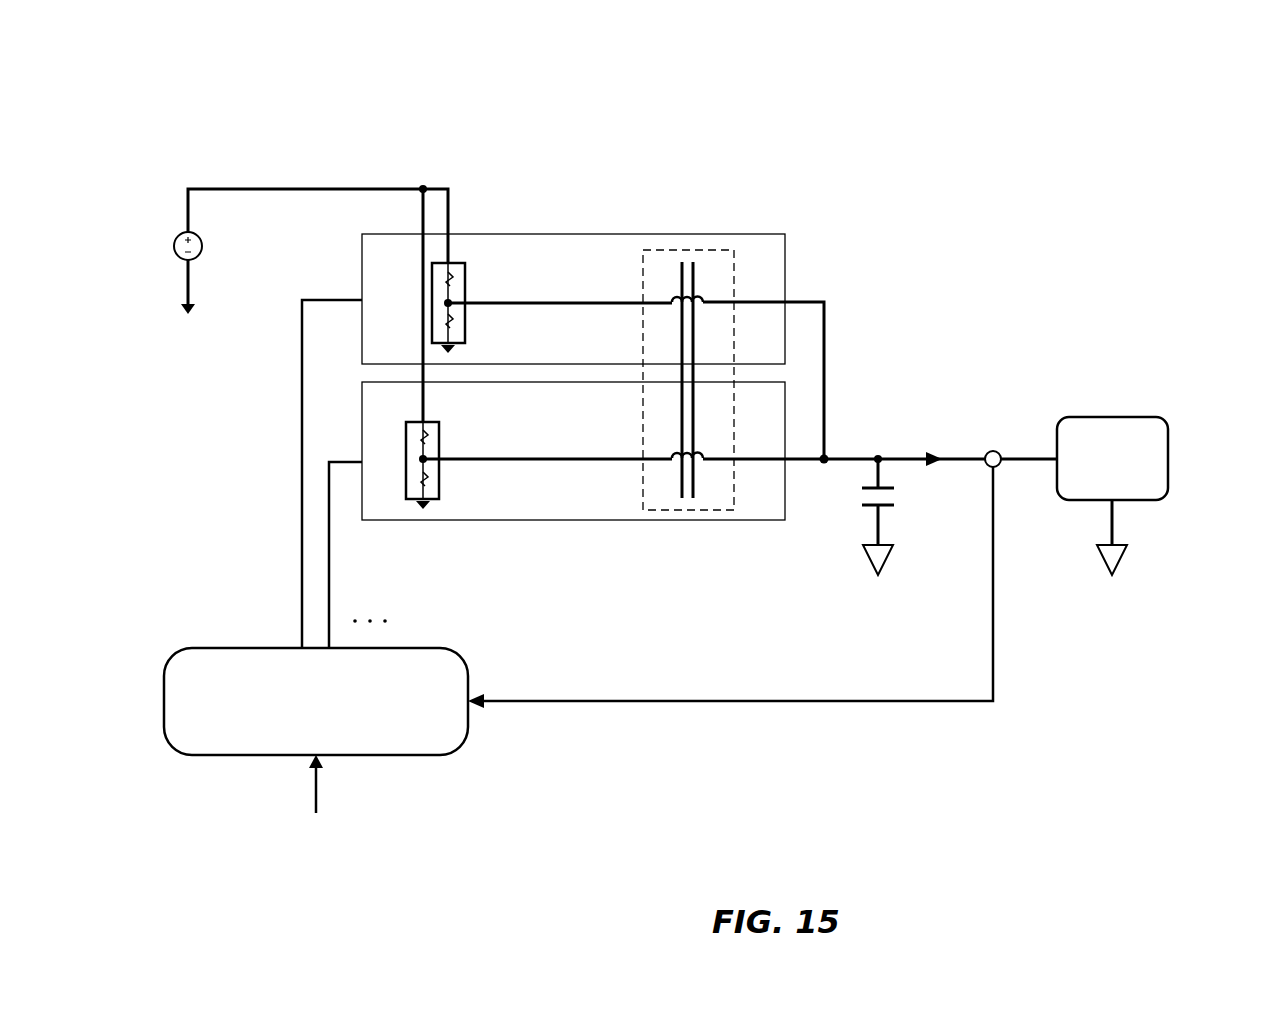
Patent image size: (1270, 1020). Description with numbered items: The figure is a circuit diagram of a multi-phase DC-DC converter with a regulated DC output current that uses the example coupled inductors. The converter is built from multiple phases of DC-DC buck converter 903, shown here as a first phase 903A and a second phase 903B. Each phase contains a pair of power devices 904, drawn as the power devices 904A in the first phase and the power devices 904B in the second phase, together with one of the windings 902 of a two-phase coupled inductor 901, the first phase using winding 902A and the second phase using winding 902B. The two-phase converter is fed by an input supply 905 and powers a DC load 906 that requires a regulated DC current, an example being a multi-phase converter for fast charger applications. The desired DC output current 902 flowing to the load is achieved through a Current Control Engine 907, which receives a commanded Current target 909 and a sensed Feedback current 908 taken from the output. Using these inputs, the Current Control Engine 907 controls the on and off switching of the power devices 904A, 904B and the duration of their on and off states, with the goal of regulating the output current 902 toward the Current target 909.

The two-phase coupled inductor 901 is at (710, 328).
The windings / DC output current 902 is at (740, 263).
The first winding 902A is at (698, 298).
The second winding 902B is at (703, 453).
The DC-DC buck converter phases 903 is at (573, 296).
The first phase 903A is at (525, 257).
The second phase 903B is at (522, 402).
The power devices 904 is at (316, 262).
The first power device pair 904A is at (441, 290).
The second power device pair 904B is at (415, 448).
The input supply 905 is at (200, 225).
The DC load 906 is at (1119, 438).
The Current Control Engine 907 is at (433, 735).
The feedback current 908 is at (993, 468).
The current target 909 is at (370, 857).